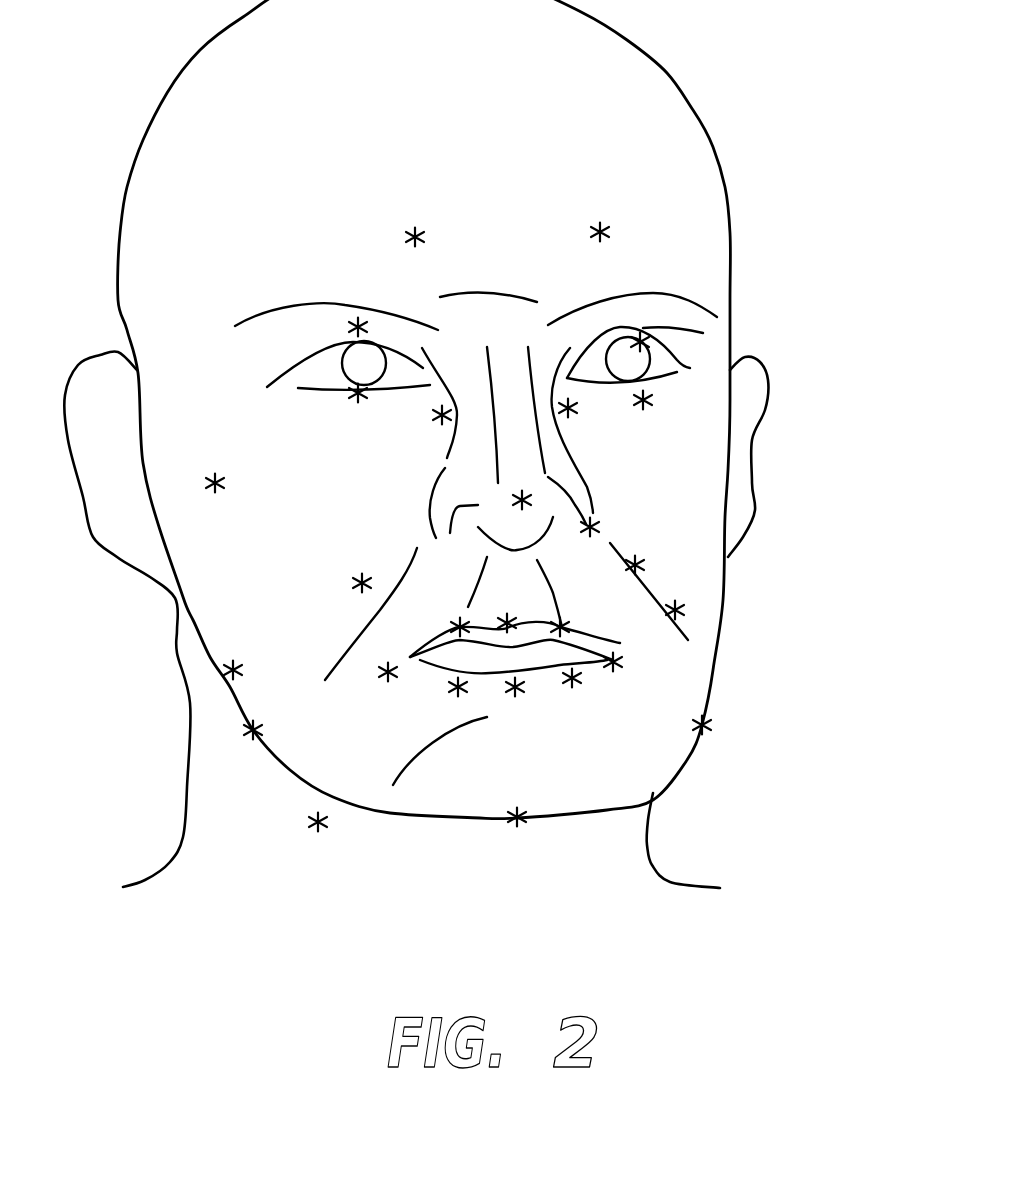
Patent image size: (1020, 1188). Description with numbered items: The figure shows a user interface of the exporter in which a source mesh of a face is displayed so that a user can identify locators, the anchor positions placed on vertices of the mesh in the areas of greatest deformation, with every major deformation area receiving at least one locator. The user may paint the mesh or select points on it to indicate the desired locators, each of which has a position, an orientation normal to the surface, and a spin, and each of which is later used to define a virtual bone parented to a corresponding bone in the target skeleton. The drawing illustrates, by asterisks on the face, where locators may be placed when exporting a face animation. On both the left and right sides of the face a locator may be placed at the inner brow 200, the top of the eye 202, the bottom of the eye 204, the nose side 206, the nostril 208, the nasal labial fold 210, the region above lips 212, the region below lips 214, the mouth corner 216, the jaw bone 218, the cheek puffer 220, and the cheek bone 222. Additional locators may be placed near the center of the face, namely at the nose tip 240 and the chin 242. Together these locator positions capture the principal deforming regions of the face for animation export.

The inner brow 200 is at (600, 225).
The top of the eye 202 is at (645, 338).
The bottom of the eye 204 is at (660, 398).
The nose side 206 is at (576, 410).
The nostril 208 is at (597, 524).
The nasal labial fold 210 is at (642, 562).
The above lips 212 is at (397, 653).
The below lips 214 is at (463, 700).
The mouth corner 216 is at (627, 660).
The jaw bone 218 is at (248, 732).
The cheek puffer 220 is at (228, 670).
The cheek bone 222 is at (220, 487).
The nose tip 240 is at (516, 496).
The chin 242 is at (513, 823).